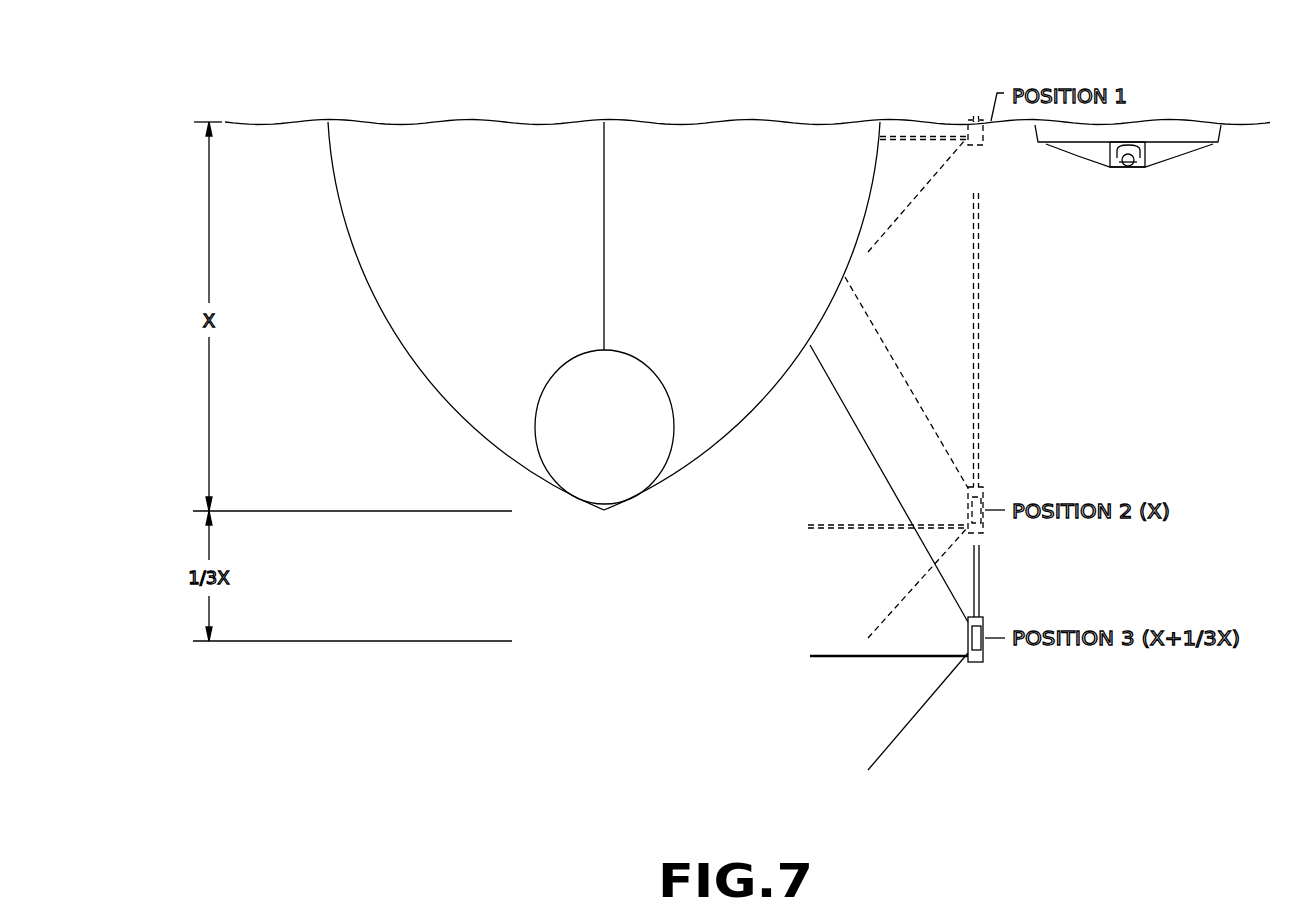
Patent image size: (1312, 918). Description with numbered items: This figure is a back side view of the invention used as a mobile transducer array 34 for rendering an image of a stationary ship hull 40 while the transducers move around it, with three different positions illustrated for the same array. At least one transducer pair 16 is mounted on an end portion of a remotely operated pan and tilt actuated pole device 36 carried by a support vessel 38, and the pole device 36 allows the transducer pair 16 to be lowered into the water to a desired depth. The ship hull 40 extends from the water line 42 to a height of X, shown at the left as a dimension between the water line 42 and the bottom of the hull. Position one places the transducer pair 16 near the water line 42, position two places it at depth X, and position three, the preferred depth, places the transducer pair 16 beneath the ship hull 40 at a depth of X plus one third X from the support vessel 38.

The transducer pair 16 is at (985, 658).
The mobile transducer array 34 is at (1108, 773).
The pan and tilt actuated pole device 36 is at (978, 352).
The support vessel 38 is at (1207, 143).
The ship hull 40 is at (422, 302).
The water line 42 is at (268, 123).